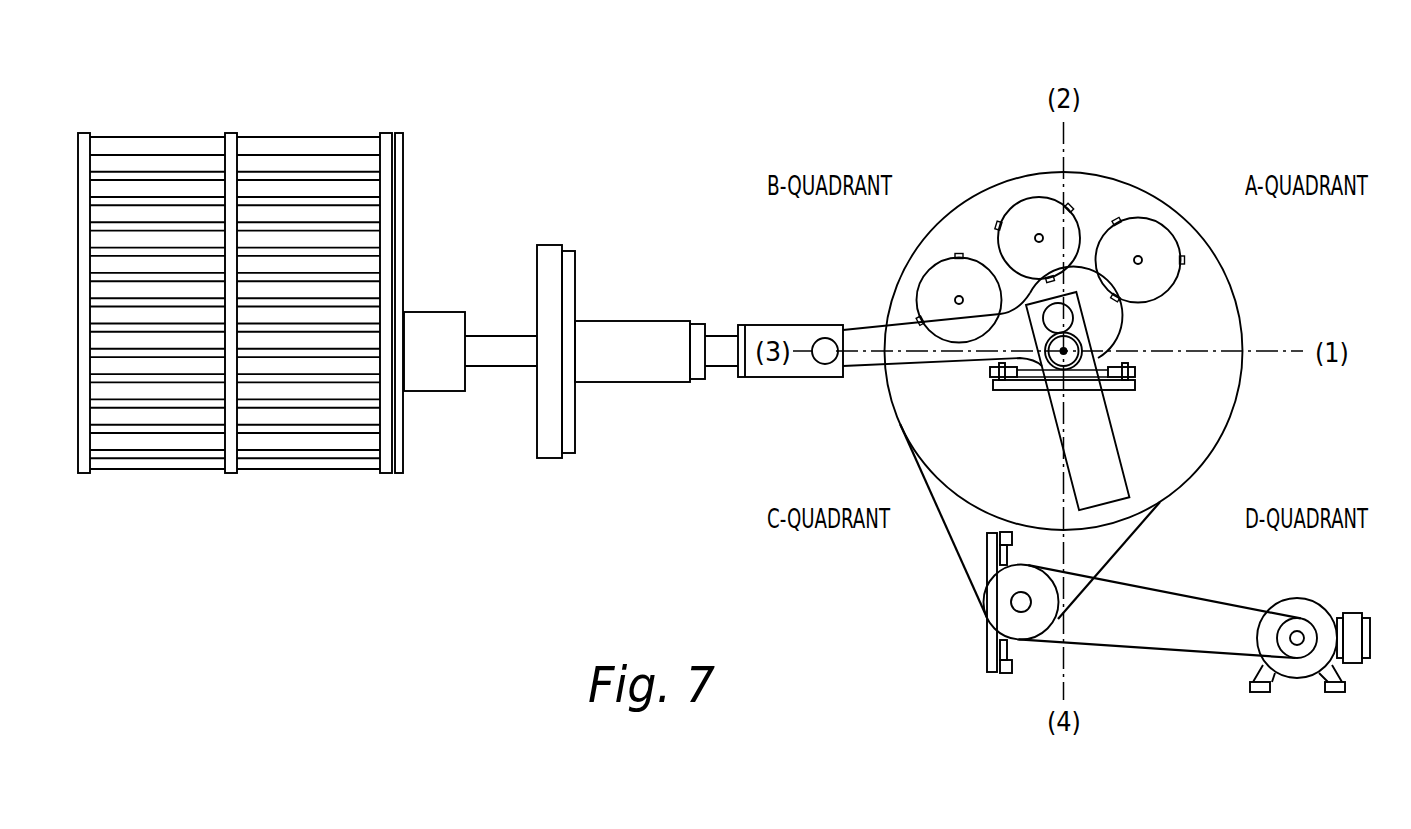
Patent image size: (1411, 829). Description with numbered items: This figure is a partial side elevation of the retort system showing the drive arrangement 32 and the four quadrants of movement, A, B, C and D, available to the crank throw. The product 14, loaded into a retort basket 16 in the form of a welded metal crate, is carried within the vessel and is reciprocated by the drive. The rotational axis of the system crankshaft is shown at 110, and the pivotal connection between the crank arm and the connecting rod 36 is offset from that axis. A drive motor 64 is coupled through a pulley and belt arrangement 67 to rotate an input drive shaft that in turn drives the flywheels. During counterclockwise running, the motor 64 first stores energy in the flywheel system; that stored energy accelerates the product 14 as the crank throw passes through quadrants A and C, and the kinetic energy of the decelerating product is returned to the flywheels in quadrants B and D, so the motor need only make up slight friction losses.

The product 14 is at (292, 251).
The retort basket 16 is at (390, 167).
The drive arrangement 32 is at (922, 118).
The connecting rod 36 is at (870, 372).
The rotational axis of the system crankshaft 110 is at (1045, 368).
The drive motor 64 is at (1307, 607).
The pulley and belt arrangement 67 is at (1154, 690).